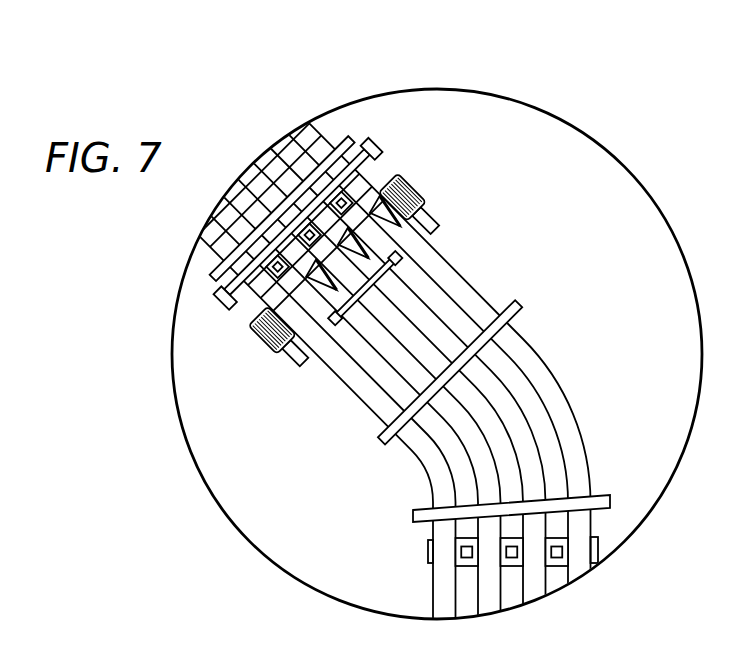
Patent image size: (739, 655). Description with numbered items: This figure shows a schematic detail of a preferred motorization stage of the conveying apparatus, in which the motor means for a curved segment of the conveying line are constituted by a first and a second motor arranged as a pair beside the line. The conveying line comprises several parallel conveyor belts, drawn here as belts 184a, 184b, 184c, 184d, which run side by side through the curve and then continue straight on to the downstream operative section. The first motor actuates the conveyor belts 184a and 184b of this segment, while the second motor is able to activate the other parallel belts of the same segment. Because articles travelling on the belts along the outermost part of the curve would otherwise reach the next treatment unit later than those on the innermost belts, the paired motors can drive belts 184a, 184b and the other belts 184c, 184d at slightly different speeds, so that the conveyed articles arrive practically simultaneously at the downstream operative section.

The conveyor belt 184a is at (353, 376).
The conveyor belt 184b is at (418, 378).
The flexible strip 184c is at (408, 302).
The flexible strip 184d is at (462, 296).